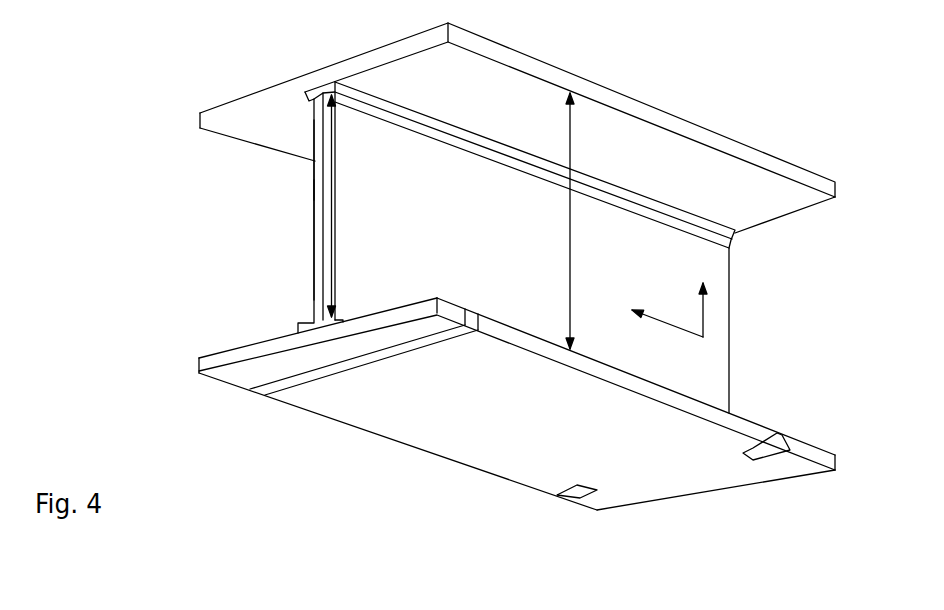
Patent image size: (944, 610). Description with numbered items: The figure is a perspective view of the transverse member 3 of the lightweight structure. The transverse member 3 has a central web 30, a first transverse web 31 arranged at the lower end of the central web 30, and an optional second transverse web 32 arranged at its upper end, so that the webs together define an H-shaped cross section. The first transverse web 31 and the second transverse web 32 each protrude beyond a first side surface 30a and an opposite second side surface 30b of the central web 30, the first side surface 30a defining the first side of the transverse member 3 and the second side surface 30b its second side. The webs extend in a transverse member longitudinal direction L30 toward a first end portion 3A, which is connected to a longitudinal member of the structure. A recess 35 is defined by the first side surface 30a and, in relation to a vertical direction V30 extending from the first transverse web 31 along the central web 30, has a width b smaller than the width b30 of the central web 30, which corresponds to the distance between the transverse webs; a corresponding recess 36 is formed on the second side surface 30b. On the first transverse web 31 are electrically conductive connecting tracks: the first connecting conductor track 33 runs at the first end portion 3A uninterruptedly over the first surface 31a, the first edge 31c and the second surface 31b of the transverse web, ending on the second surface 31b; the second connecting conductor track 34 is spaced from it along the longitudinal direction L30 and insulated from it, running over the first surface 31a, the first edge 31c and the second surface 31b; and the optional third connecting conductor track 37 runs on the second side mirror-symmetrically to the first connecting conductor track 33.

The transverse member 3 is at (143, 157).
The first end portion 3A is at (755, 115).
The second transverse web 32 is at (750, 153).
The central web 30 is at (318, 243).
The first side surface 30a is at (420, 193).
The second side surface 30b is at (312, 213).
The recess 36 is at (312, 190).
The recess 35 is at (362, 116).
The width of recess b is at (337, 208).
The width of central web b30 is at (572, 212).
The vertical direction V30 is at (703, 312).
The transverse member longitudinal direction L30 is at (662, 325).
The first transverse web 31 is at (200, 365).
The first surface of transverse web 31a is at (238, 347).
The second surface of transverse web 31b is at (435, 428).
The first edge 31c is at (650, 392).
The second connecting conductor track 34 is at (328, 365).
The third connecting conductor track 37 is at (567, 497).
The first connecting conductor track 33 is at (763, 455).